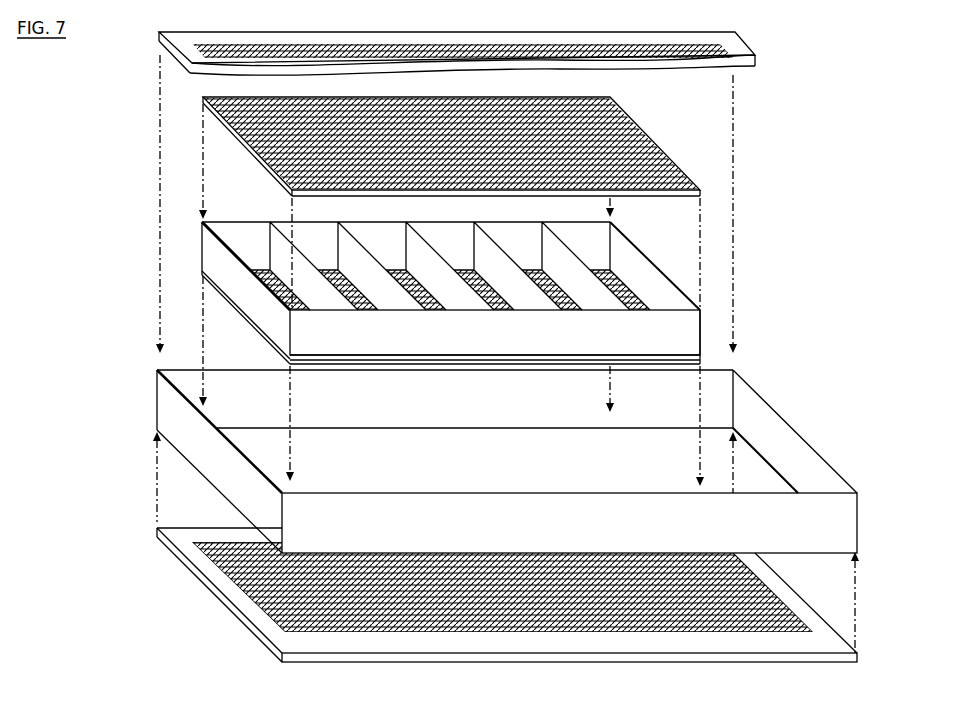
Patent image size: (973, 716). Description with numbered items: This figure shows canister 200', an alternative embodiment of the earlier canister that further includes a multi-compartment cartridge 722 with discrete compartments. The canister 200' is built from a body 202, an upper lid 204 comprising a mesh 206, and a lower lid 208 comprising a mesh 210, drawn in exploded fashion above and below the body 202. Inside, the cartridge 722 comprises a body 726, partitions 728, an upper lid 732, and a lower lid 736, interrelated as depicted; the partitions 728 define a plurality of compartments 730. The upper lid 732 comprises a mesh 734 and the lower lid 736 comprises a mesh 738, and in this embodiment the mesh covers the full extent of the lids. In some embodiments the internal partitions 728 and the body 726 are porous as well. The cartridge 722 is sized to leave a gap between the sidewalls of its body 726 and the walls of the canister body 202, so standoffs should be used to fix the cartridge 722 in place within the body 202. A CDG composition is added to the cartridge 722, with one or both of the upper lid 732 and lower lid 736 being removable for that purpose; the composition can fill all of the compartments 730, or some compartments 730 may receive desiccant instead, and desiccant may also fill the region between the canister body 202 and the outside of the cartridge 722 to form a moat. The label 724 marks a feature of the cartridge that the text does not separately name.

The canister 200' is at (511, 347).
The upper lid 204 is at (168, 50).
The mesh 206 is at (747, 42).
The upper lid 732 is at (243, 138).
The mesh 734 is at (660, 126).
The multi-compartment cartridge 722 is at (178, 298).
The partitions 728 is at (424, 265).
The compartments 730 is at (231, 229).
The mesh 738 is at (621, 268).
The lower lid 736 is at (237, 306).
The body 726 is at (521, 347).
The outer wall 724 is at (716, 325).
The body 202 is at (800, 437).
The lower lid 208 is at (198, 578).
The mesh 210 is at (246, 609).